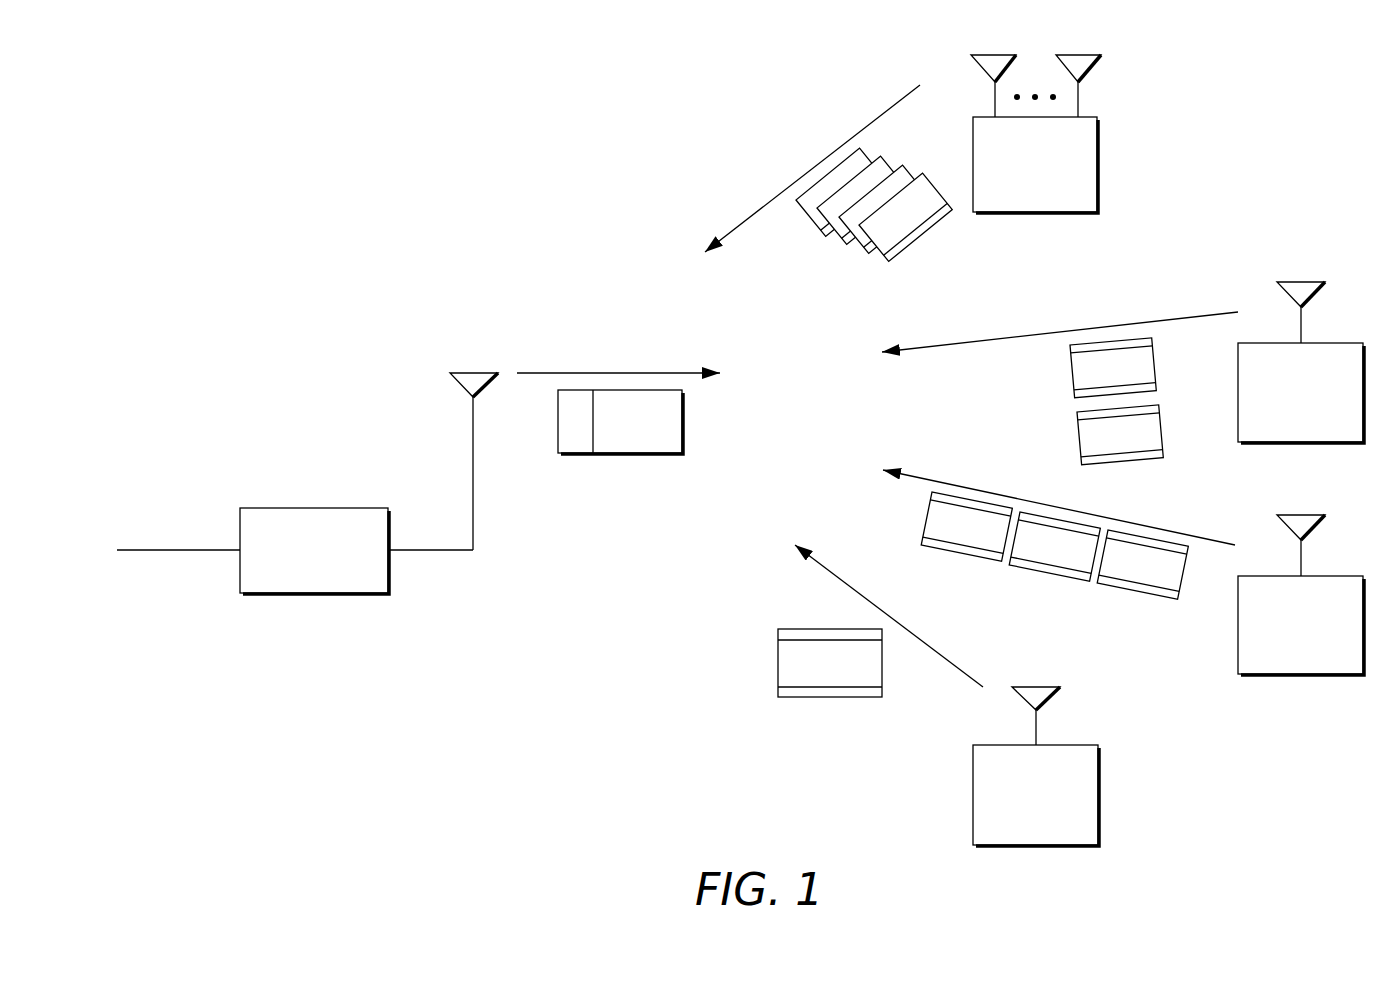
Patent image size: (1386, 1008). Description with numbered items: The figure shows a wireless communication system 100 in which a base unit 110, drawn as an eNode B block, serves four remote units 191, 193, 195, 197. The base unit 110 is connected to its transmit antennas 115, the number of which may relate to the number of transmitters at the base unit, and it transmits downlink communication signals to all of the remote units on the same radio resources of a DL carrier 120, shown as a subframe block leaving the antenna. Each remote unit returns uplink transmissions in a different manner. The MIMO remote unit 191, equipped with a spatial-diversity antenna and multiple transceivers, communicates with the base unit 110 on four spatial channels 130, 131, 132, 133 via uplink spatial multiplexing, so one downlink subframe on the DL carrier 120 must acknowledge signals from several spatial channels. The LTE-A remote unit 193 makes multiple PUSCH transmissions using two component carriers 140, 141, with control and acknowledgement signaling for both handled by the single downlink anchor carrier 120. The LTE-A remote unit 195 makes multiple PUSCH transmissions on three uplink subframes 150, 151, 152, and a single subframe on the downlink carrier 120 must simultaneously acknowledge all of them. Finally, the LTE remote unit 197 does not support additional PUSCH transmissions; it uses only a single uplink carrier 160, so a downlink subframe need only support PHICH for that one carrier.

The wireless communication system 100 is at (161, 111).
The base unit 110 is at (373, 508).
The transmit antennas 115 is at (456, 379).
The DL carrier 120 is at (558, 420).
The spatial channel 130 is at (932, 183).
The spatial channel 131 is at (872, 253).
The spatial channel 132 is at (847, 248).
The spatial channel 133 is at (813, 222).
The component carrier 140 is at (1070, 367).
The component carrier 141 is at (1078, 437).
The subframe 150 is at (960, 553).
The subframe 151 is at (1050, 572).
The subframe 152 is at (1140, 592).
The single uplink carrier 160 is at (778, 663).
The remote unit 191 is at (1098, 166).
The remote unit 193 is at (1238, 388).
The remote unit 195 is at (1238, 623).
The remote unit 197 is at (973, 793).